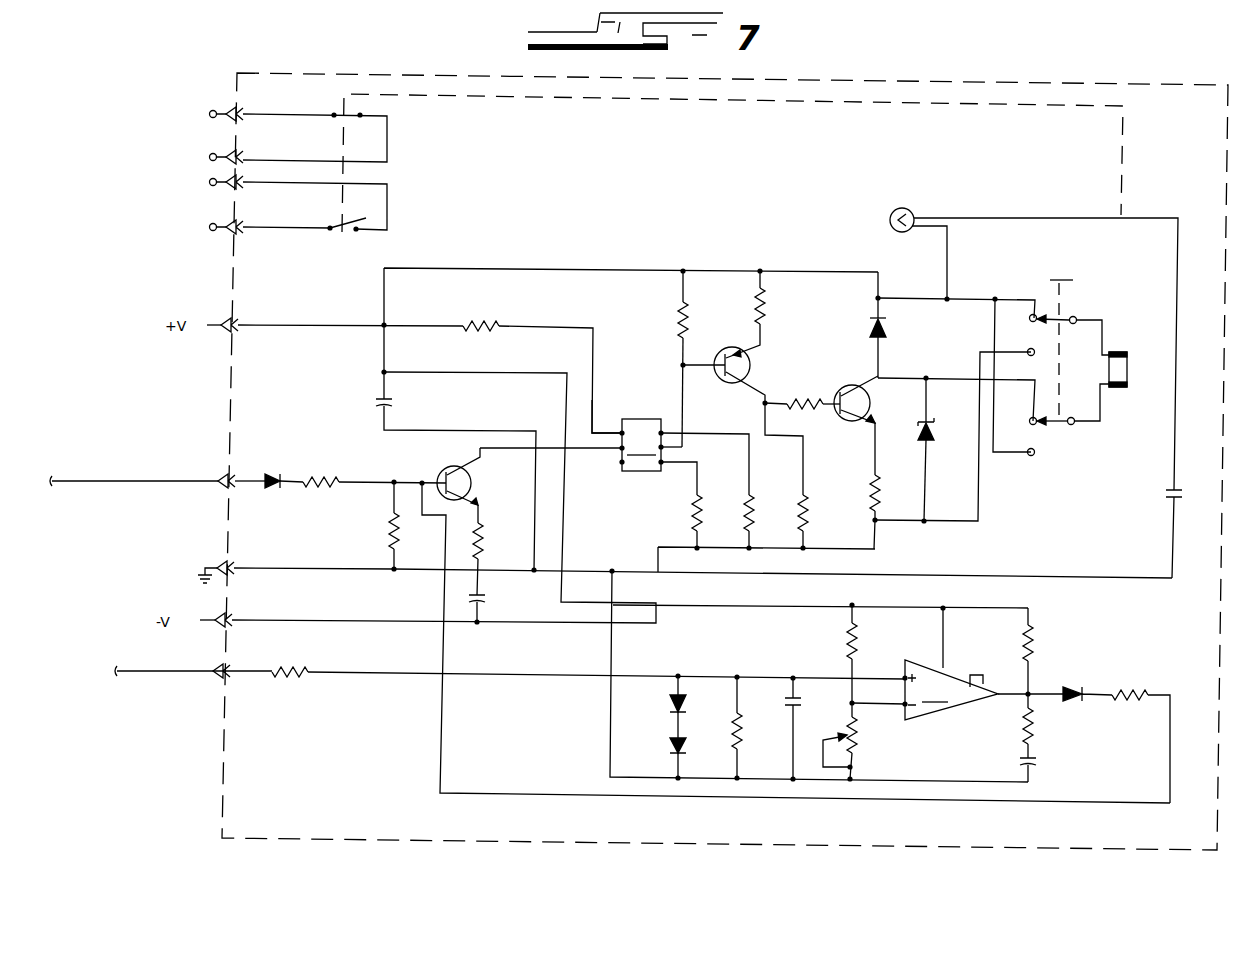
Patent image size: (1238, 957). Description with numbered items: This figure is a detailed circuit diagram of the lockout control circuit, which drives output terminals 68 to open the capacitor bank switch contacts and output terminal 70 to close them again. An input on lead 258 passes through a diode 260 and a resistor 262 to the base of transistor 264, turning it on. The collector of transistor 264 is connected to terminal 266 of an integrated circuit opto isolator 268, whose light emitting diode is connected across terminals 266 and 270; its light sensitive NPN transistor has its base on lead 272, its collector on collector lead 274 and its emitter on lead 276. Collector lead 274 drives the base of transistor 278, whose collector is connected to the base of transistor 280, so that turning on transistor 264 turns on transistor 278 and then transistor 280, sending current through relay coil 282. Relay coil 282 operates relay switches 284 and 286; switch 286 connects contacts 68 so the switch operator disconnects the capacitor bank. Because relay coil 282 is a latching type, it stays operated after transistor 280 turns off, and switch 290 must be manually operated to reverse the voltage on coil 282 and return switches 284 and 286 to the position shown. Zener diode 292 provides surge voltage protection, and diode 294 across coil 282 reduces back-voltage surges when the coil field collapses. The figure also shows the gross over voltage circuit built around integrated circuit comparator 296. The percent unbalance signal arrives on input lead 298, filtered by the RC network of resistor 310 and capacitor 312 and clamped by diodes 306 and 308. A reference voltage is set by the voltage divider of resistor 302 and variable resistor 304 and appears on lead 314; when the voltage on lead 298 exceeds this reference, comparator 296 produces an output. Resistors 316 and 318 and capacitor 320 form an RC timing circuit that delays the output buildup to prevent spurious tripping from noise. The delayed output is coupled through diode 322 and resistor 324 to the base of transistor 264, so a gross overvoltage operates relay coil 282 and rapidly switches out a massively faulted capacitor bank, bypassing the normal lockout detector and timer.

The output terminal 70 is at (210, 156).
The output terminals 68 is at (210, 227).
The relay switch 284 is at (361, 122).
The relay switch 286 is at (366, 218).
The lead 258 is at (98, 481).
The diode 260 is at (276, 475).
The resistor 262 is at (326, 479).
The transistor 264 is at (470, 492).
The terminal 266 is at (590, 452).
The integrated circuit opto isolator 268 is at (641, 445).
The terminal 270 is at (596, 417).
The lead 272 is at (695, 433).
The collector lead 274 is at (684, 447).
The lead 276 is at (692, 485).
The transistor 278 is at (751, 368).
The transistor 280 is at (832, 418).
The relay coil 282 is at (1131, 372).
The switch 290 is at (1086, 256).
The zener diode 292 is at (936, 437).
The diode 294 is at (893, 331).
The integrated circuit comparator 296 is at (950, 690).
The input lead 298 is at (864, 678).
The resistor 302 is at (848, 632).
The variable resistor 304 is at (857, 752).
The diode 306 is at (670, 701).
The diode 308 is at (670, 746).
The resistor 310 is at (739, 746).
The capacitor 312 is at (820, 712).
The lead 314 is at (884, 705).
The resistor 316 is at (1032, 738).
The resistor 318 is at (1033, 653).
The capacitor 320 is at (1034, 760).
The diode 322 is at (1078, 688).
The resistor 324 is at (1141, 694).